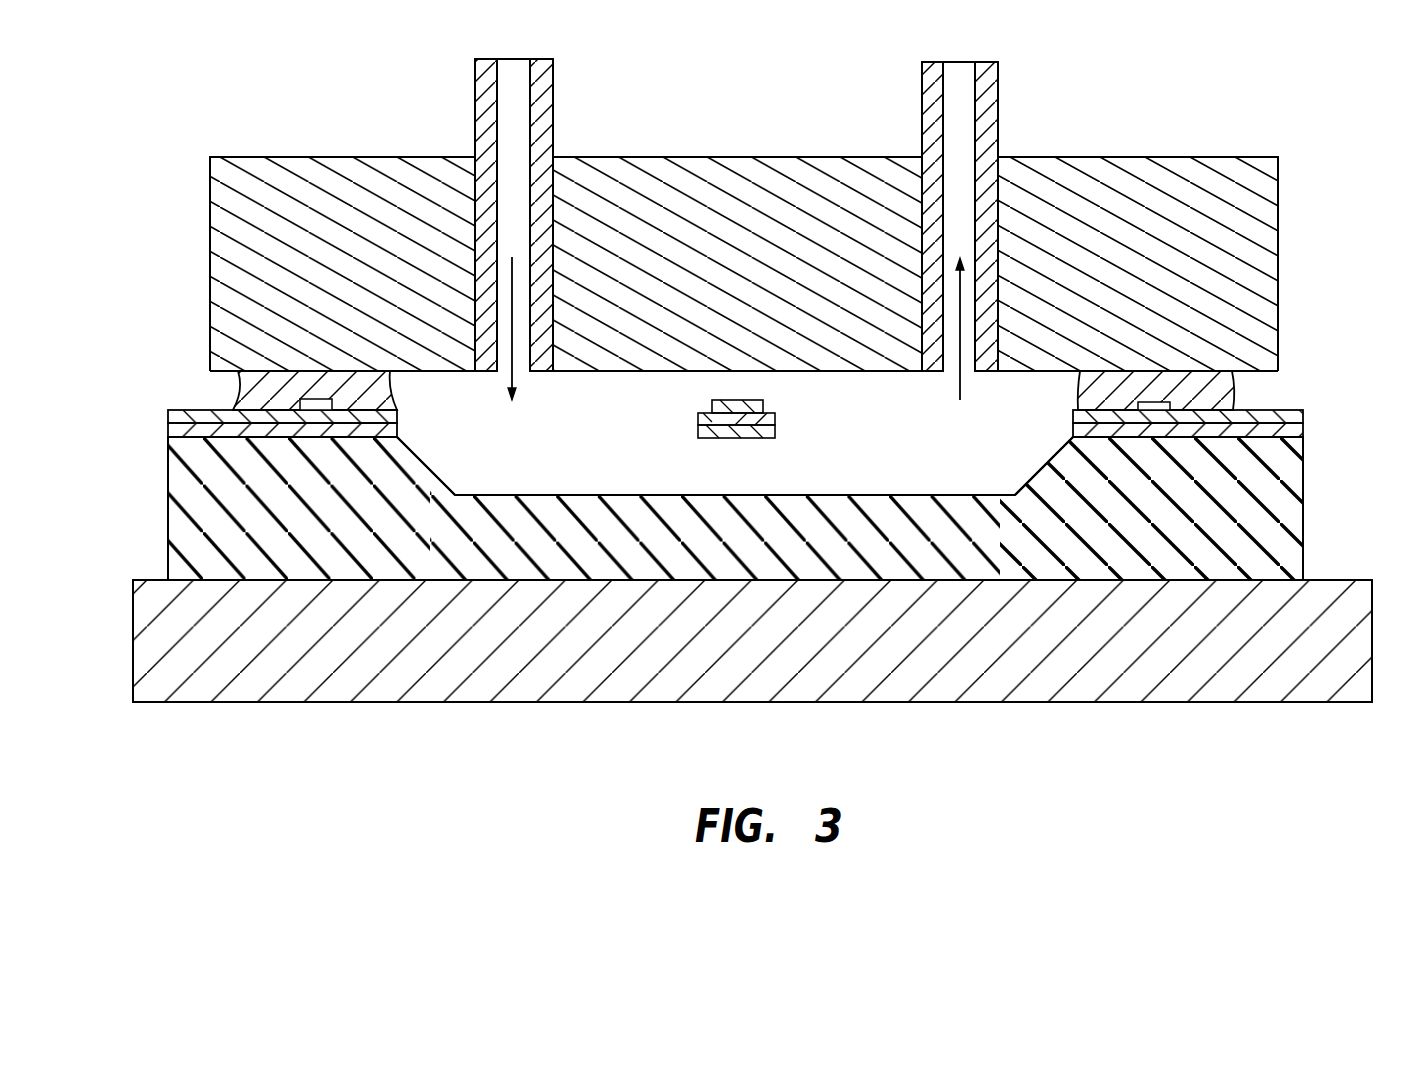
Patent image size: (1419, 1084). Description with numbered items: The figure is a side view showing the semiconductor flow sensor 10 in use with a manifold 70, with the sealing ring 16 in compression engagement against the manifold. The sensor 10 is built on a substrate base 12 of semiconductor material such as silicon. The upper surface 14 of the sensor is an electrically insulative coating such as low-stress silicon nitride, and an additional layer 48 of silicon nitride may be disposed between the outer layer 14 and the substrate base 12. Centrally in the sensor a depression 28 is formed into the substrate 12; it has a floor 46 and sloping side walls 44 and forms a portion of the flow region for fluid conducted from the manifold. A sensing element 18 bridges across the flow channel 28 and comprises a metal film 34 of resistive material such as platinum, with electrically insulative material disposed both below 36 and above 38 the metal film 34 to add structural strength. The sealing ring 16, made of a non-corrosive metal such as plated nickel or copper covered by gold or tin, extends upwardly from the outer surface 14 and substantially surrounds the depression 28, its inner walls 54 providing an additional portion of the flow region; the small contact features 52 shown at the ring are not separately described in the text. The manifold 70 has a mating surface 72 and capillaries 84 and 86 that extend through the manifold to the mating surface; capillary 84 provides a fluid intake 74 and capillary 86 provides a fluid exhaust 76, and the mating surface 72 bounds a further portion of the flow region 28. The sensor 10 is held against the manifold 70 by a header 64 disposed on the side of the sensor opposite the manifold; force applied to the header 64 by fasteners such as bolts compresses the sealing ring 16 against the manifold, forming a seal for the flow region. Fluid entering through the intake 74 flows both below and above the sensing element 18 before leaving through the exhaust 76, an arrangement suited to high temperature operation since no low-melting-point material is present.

The semiconductor flow sensor 10 is at (739, 487).
The substrate base 12 is at (1292, 520).
The upper surface 14 is at (1293, 421).
The sealing ring 16 is at (1197, 403).
The sensing element 18 is at (736, 431).
The depression 28 is at (628, 451).
The metal film 34 is at (748, 418).
The insulative material below 36 is at (733, 438).
The insulative material above 38 is at (743, 400).
The sloping side wall 44 is at (437, 473).
The floor 46 is at (863, 495).
The additional layer 48 is at (1293, 432).
The left seal 52 is at (300, 403).
The inner walls 54 is at (1078, 400).
The header 64 is at (342, 685).
The manifold 70 is at (775, 247).
The mating surface 72 is at (440, 372).
The fluid intake 74 is at (520, 229).
The fluid exhaust 76 is at (895, 222).
The capillary 84 is at (540, 122).
The capillary 86 is at (928, 135).